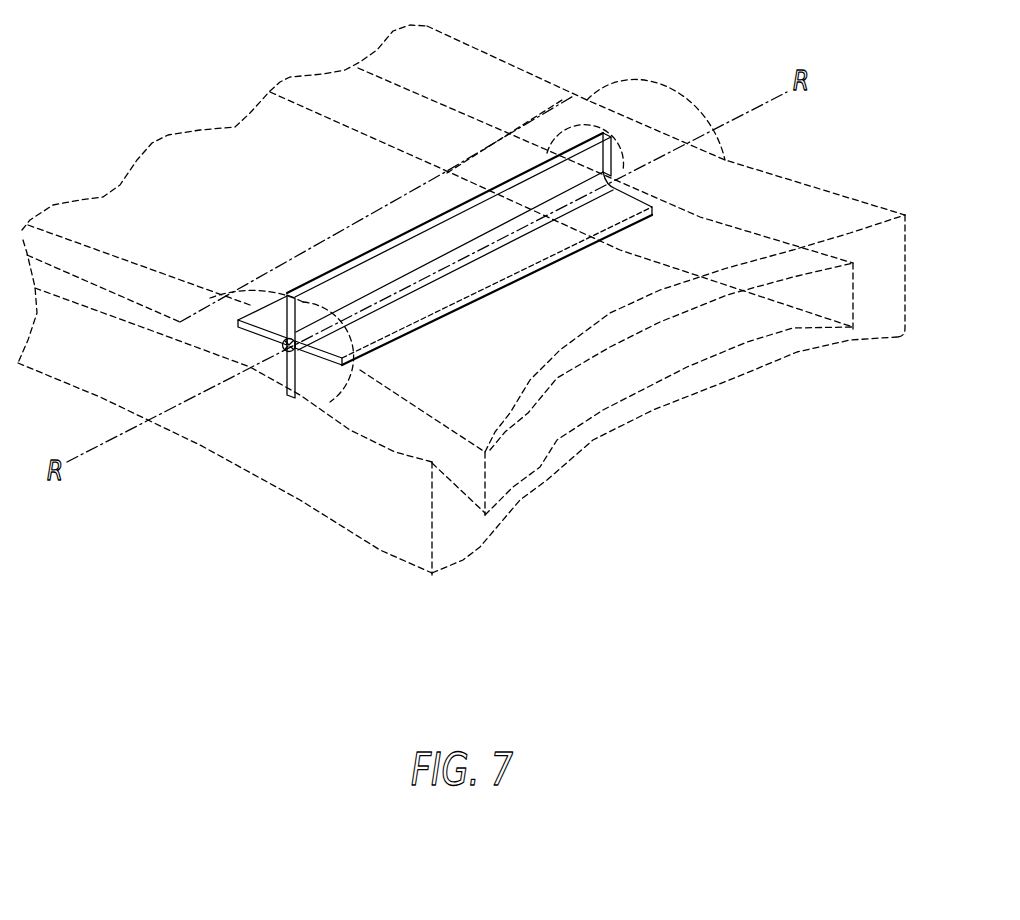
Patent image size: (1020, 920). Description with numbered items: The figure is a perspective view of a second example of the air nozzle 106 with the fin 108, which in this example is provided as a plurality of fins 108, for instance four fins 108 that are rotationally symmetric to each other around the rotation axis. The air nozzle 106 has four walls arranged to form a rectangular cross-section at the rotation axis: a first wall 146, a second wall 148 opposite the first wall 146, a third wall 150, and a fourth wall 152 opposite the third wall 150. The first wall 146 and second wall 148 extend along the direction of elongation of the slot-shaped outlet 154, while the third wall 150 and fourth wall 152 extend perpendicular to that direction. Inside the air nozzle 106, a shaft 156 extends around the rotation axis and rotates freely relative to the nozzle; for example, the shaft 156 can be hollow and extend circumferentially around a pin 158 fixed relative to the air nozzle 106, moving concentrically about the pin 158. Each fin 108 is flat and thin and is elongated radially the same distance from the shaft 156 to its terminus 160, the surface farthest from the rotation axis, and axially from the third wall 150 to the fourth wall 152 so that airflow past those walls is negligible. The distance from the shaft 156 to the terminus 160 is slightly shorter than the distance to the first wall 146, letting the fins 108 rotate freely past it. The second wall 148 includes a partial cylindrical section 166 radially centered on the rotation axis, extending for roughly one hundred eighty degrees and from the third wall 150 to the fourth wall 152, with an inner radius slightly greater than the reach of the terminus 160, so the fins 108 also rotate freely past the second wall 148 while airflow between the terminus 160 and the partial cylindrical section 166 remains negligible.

The air nozzle 106 is at (777, 173).
The fin 108 is at (257, 320).
The first wall 146 is at (580, 400).
The second wall 148 is at (227, 163).
The third wall 150 is at (397, 520).
The fourth wall 152 is at (817, 187).
The outlet 154 is at (753, 363).
The shaft 156 is at (607, 173).
The pin 158 is at (285, 337).
The terminus 160 is at (377, 247).
The partial cylindrical section 166 is at (317, 243).